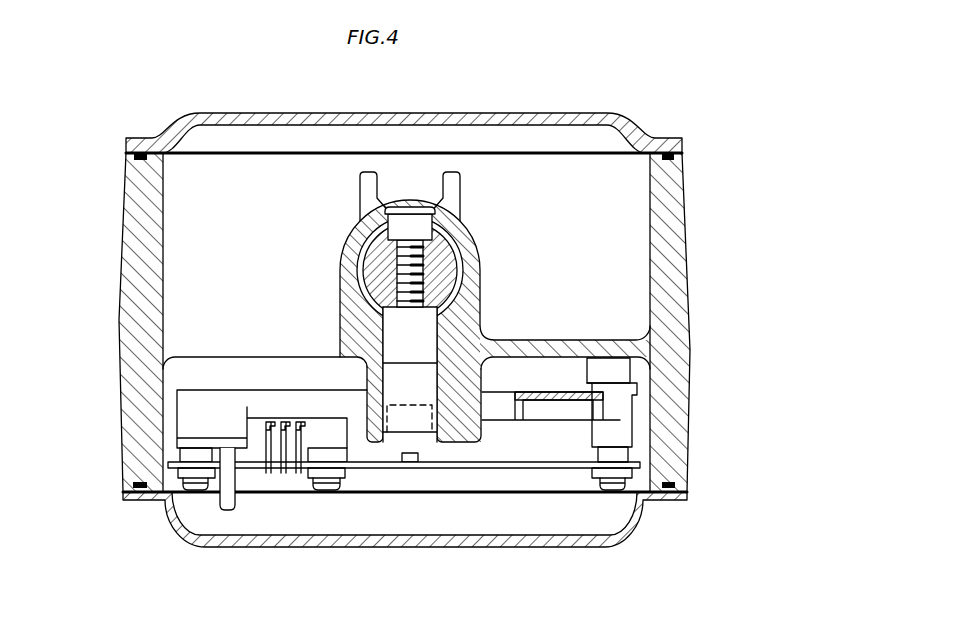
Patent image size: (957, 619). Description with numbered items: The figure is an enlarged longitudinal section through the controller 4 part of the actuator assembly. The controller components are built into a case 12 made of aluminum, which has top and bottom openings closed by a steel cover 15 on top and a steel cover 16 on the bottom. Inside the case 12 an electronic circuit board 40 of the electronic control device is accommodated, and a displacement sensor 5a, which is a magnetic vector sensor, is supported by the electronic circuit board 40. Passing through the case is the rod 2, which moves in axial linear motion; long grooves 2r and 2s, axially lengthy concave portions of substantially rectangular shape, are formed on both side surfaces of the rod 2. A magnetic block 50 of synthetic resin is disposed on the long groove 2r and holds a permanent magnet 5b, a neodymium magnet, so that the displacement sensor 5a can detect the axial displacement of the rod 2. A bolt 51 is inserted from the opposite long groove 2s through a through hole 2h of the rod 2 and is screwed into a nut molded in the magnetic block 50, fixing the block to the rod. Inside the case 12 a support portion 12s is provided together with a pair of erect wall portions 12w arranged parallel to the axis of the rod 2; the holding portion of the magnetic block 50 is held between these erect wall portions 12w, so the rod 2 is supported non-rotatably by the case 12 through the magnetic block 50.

The controller 4 is at (410, 332).
The rod 2 is at (375, 262).
The through hole 2h is at (366, 198).
The long groove 2r is at (461, 203).
The long groove 2s is at (438, 213).
The bolt 51 is at (404, 207).
The cover 15 is at (606, 112).
The cover 16 is at (605, 540).
The case 12 is at (682, 340).
The support portion 12s is at (560, 347).
The erect wall portion 12w is at (373, 395).
The magnetic block 50 is at (380, 347).
The displacement sensor 5a is at (410, 468).
The permanent magnet 5b is at (420, 428).
The electronic circuit board 40 is at (353, 468).